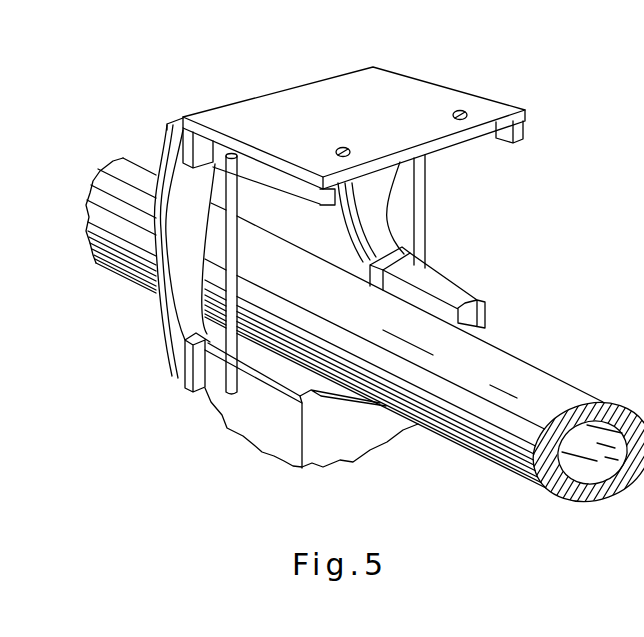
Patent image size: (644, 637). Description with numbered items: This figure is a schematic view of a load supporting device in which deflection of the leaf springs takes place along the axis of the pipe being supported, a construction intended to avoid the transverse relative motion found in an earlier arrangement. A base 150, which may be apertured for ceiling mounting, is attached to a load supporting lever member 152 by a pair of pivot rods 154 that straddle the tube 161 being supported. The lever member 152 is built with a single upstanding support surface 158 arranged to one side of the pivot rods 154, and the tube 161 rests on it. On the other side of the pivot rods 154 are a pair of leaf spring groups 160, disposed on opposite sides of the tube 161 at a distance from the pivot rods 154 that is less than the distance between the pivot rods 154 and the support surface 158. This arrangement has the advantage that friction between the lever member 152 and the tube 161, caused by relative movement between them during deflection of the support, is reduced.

The base 150 is at (415, 90).
The load supporting lever member 152 is at (275, 430).
The pivot rods 154 is at (426, 213).
The upstanding support surface 158 is at (375, 432).
The leaf spring groups 160 is at (360, 216).
The tube 161 is at (530, 382).